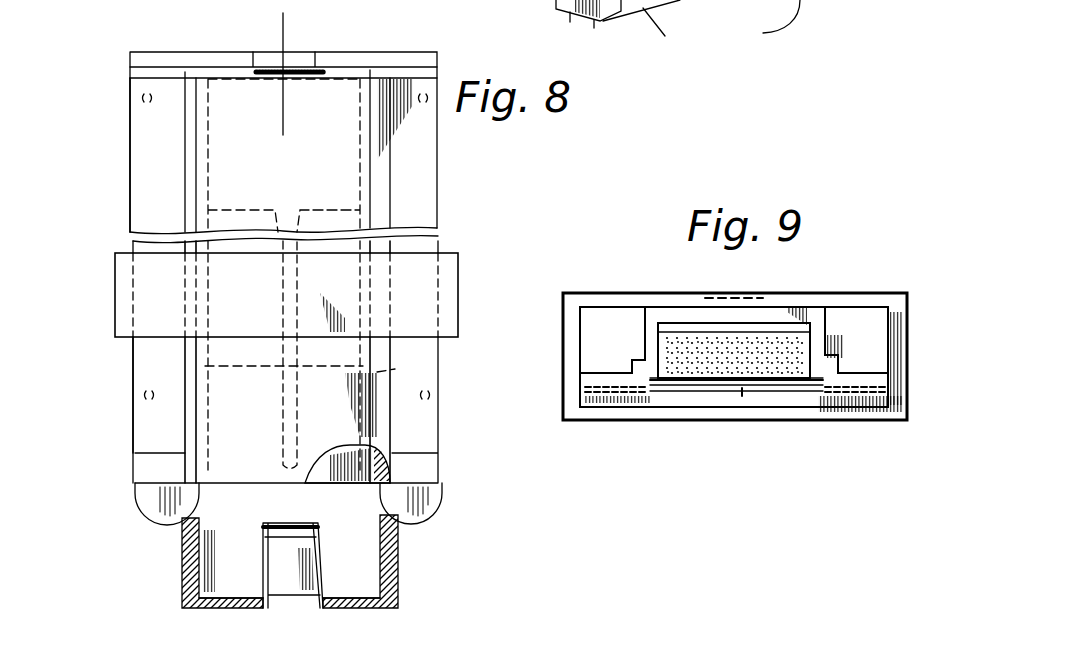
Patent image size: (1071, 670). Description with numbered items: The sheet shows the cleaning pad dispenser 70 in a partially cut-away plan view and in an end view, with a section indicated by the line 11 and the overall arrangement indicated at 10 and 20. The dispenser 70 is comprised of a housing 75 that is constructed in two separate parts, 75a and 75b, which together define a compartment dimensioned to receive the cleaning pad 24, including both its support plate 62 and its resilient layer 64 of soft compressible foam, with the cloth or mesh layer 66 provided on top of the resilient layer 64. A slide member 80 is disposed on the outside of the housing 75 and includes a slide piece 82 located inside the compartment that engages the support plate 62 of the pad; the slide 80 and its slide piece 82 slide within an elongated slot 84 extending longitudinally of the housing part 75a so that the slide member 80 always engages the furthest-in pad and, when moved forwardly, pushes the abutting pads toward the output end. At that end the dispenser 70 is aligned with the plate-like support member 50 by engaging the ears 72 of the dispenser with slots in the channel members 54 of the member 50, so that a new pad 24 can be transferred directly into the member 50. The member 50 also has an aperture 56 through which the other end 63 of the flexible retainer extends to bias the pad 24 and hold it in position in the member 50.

In FIG. 8, the dispensing apparatus 10 is at (281, 24).
In FIG. 8, the section line 11- 11 is at (120, 234).
In FIG. 8, the reel assembly 20 is at (556, 6).
In FIG. 8, the cleaning pad 24 is at (335, 492).
In FIG. 8, the support member 50 is at (278, 585).
In FIG. 8, the channel member 54 is at (181, 545).
In FIG. 8, the aperture 56 is at (298, 602).
In FIG. 8, the support plate 62 is at (571, 22).
In FIG. 9, the support plate 62 is at (808, 390).
In FIG. 8, the other end of the retainer 63 is at (290, 568).
In FIG. 8, the resilient layer 64 is at (594, 28).
In FIG. 9, the resilient layer 64 is at (773, 368).
In FIG. 9, the mesh layer 66 is at (770, 330).
In FIG. 8, the pad dispenser 70 is at (450, 402).
In FIG. 9, the pad dispenser 70 is at (640, 284).
In FIG. 8, the ears 72 is at (134, 498).
In FIG. 9, the ears 72 is at (612, 404).
In FIG. 8, the housing 75 is at (132, 116).
In FIG. 9, the housing 75 is at (832, 332).
In FIG. 9, the housing part 75a is at (685, 397).
In FIG. 8, the housing part 75b is at (146, 373).
In FIG. 9, the housing part 75b is at (673, 312).
In FIG. 8, the slide member 80 is at (459, 295).
In FIG. 9, the slide member 80 is at (594, 294).
In FIG. 8, the slide piece 82 is at (397, 369).
In FIG. 8, the elongated slot 84 is at (283, 400).
In FIG. 9, the elongated slot 84 is at (743, 392).